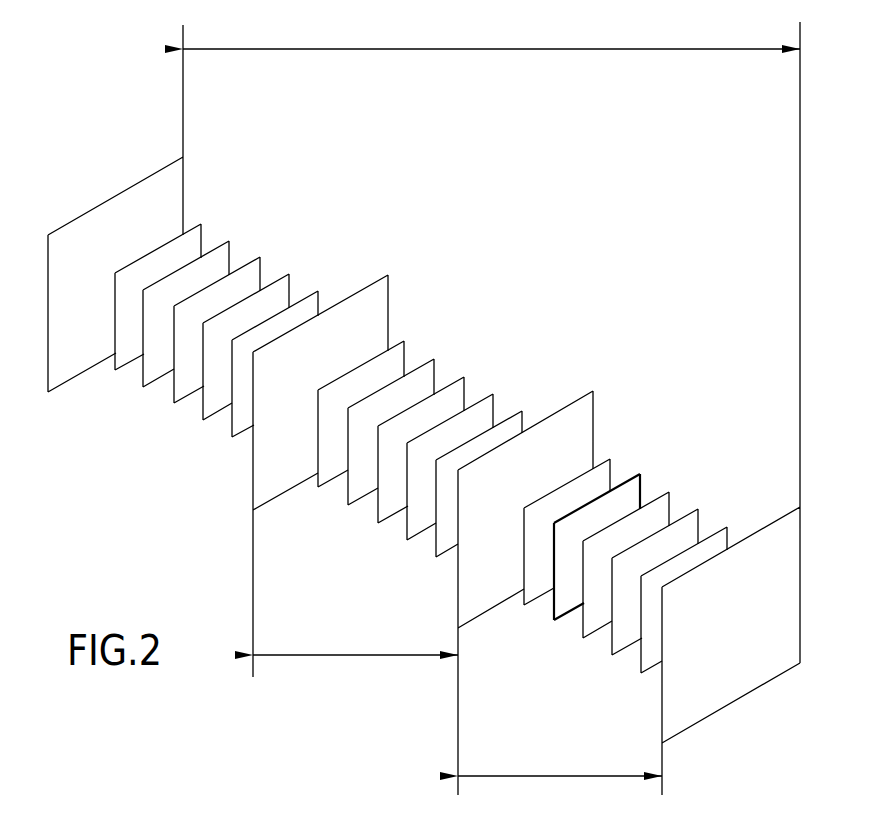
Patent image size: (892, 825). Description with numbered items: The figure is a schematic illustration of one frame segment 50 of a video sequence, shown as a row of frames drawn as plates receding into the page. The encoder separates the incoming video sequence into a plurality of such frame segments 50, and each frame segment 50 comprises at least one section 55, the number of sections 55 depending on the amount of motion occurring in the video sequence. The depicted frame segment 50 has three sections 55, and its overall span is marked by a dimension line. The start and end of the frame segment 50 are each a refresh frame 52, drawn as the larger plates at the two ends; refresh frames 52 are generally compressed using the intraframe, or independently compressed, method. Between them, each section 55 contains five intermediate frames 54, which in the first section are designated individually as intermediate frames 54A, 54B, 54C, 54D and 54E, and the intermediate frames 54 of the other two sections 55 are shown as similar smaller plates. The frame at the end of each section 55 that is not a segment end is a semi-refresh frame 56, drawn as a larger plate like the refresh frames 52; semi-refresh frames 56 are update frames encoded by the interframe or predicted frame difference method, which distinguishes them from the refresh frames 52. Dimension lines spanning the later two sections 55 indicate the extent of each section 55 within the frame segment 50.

The frame segment 50 is at (491, 263).
The refresh frame 52 is at (152, 176).
The intermediate frame 54 is at (453, 377).
The intermediate frame 54A is at (123, 370).
The intermediate frame 54B is at (152, 388).
The intermediate frame 54C is at (243, 260).
The intermediate frame 54D is at (280, 277).
The intermediate frame 54E is at (232, 432).
The section 55 is at (457, 652).
The semi-refresh frame 56 is at (378, 281).